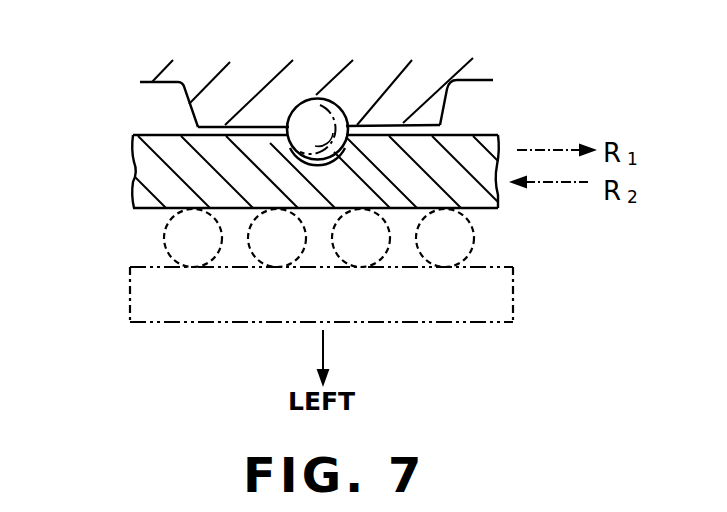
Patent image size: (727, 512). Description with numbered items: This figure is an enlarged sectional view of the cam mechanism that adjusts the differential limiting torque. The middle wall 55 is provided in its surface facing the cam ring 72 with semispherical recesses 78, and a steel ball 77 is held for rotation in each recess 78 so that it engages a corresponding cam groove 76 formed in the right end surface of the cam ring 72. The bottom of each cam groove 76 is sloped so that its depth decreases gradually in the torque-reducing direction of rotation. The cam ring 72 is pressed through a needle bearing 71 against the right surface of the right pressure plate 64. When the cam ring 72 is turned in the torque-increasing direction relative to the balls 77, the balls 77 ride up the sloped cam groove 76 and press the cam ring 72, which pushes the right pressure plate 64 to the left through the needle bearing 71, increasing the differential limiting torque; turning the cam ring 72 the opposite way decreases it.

The middle wall 55 is at (204, 72).
The ball 77 is at (343, 100).
The semispherical recess 78 is at (297, 103).
The cam ring 72 is at (152, 170).
The cam groove 76 is at (292, 156).
The needle bearing 71 is at (170, 238).
The right pressure plate 64 is at (507, 292).